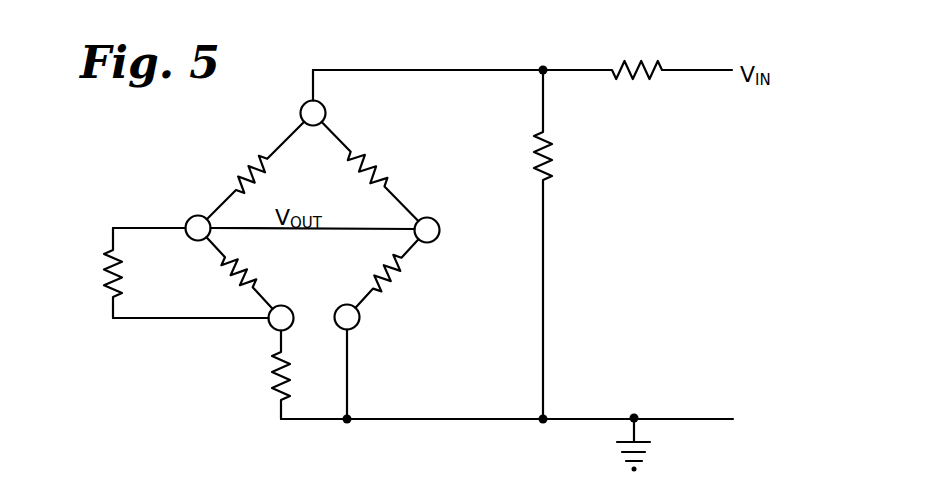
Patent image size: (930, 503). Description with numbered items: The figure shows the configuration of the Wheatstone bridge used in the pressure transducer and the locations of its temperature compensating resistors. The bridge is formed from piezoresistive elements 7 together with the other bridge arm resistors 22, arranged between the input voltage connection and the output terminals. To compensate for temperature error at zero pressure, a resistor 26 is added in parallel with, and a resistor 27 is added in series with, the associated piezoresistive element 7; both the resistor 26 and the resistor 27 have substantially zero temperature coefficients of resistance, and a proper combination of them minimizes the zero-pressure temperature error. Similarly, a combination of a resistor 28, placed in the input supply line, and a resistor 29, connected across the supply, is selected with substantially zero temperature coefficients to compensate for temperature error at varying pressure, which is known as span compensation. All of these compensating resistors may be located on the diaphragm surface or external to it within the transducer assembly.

The bridge resistor (first pair) 22 is at (248, 164).
The piezoresistive element 7 is at (378, 167).
The resistor 26 is at (103, 286).
The resistor 27 is at (270, 374).
The resistor 28 is at (640, 78).
The resistor 29 is at (549, 172).